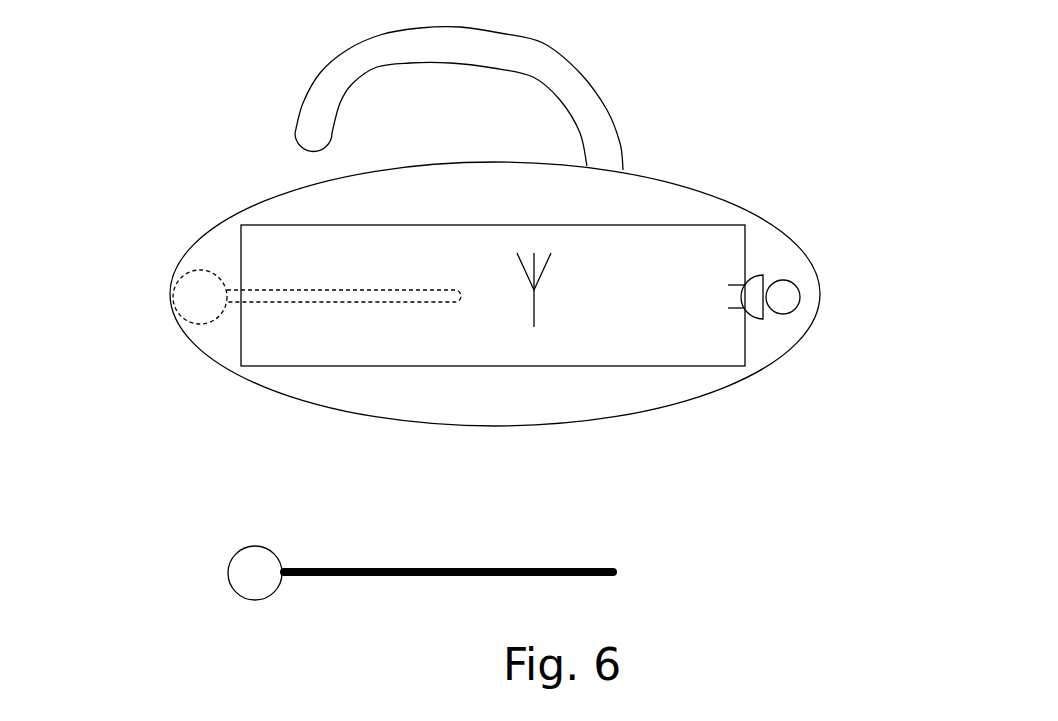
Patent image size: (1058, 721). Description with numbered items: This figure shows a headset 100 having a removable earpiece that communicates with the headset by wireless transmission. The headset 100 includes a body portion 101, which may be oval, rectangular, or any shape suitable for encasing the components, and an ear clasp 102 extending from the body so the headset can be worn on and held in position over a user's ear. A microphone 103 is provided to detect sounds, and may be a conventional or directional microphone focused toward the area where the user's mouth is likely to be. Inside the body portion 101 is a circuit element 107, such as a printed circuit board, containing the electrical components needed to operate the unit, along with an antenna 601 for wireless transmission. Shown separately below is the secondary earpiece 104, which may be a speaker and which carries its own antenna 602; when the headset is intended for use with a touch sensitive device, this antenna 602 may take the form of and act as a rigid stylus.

The headset 100 is at (491, 212).
The body portion 101 is at (466, 291).
The ear clasp 102 is at (527, 88).
The microphone 103 is at (835, 253).
The secondary earpiece 104 is at (200, 621).
The circuit element 107 is at (568, 346).
The antenna 601 is at (598, 360).
The antenna 602 is at (391, 536).